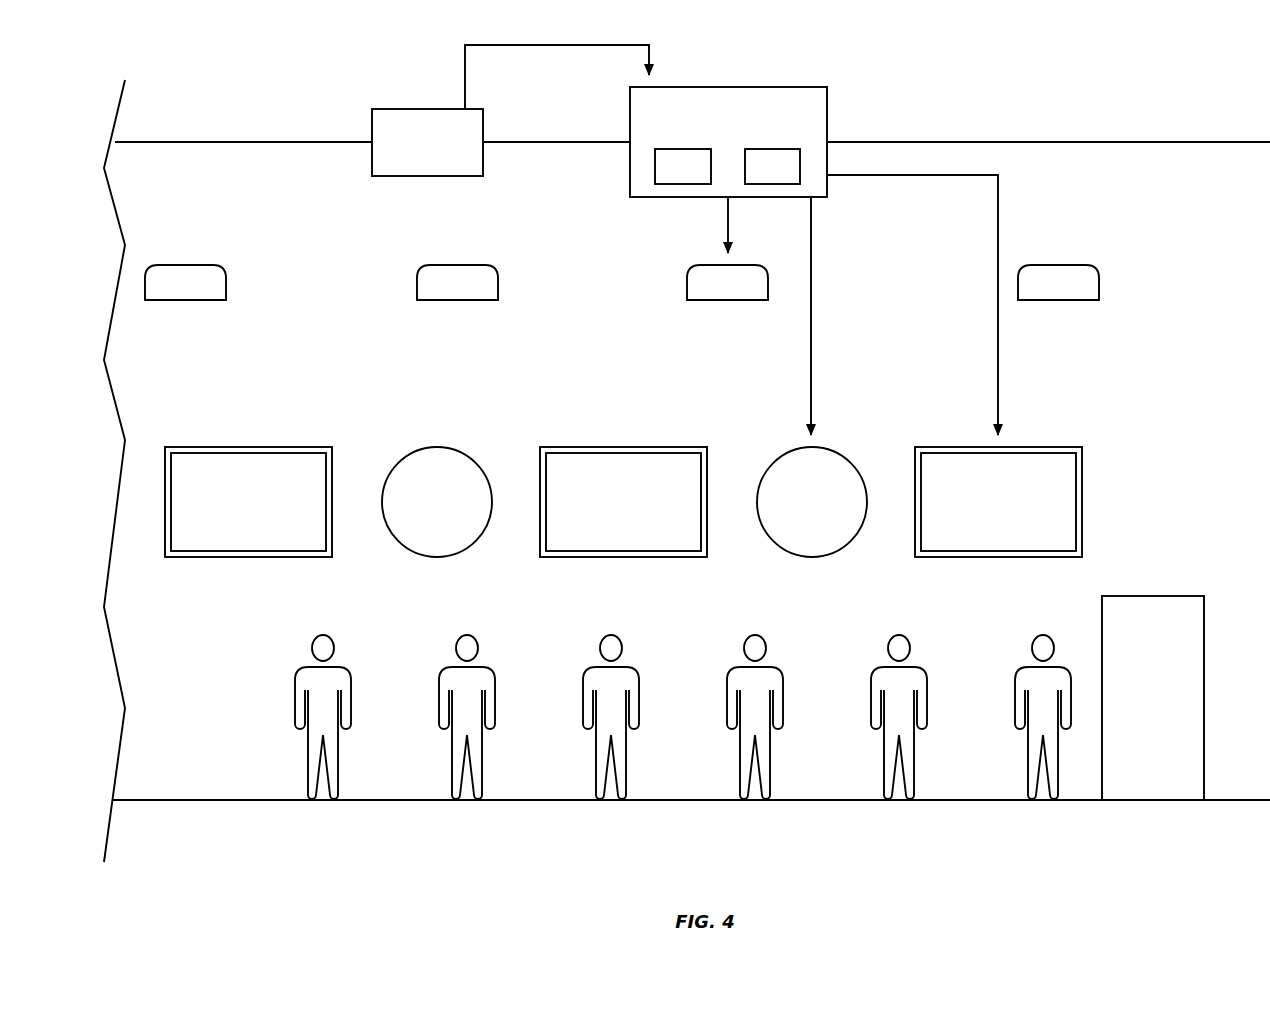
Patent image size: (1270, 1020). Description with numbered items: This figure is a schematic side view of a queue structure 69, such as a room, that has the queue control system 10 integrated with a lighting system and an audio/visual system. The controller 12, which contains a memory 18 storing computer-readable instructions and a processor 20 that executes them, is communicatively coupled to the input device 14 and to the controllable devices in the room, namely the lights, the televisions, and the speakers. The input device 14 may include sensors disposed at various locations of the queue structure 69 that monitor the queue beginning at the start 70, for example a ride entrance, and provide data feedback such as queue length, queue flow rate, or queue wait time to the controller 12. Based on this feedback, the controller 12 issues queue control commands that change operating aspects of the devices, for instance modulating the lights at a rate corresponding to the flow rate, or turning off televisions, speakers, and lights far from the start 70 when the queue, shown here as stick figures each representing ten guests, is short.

The queue control system 10 is at (1203, 49).
The controller 12 is at (728, 87).
The input device 14 is at (430, 109).
The memory 18 is at (772, 149).
The processor 20 is at (683, 149).
The queue structure 69 is at (287, 142).
The start 70 is at (1153, 596).